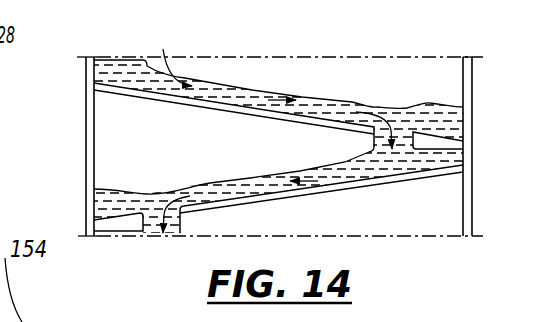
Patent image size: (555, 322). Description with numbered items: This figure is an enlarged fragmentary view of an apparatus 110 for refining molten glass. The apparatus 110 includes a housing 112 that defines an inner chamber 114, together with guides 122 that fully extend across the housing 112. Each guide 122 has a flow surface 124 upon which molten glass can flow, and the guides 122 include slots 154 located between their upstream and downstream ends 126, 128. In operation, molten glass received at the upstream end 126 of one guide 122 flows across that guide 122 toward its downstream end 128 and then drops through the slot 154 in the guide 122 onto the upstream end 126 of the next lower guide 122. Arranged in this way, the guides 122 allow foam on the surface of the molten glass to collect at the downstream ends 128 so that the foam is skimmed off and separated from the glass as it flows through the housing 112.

The apparatus 110 is at (73, 121).
The housing 112 is at (84, 153).
The inner chamber 114 is at (245, 156).
The guide 122 is at (130, 96).
The flow surface 124 is at (229, 101).
The upstream end 126 is at (108, 86).
The downstream end 128 is at (440, 132).
The slot 154 is at (412, 131).